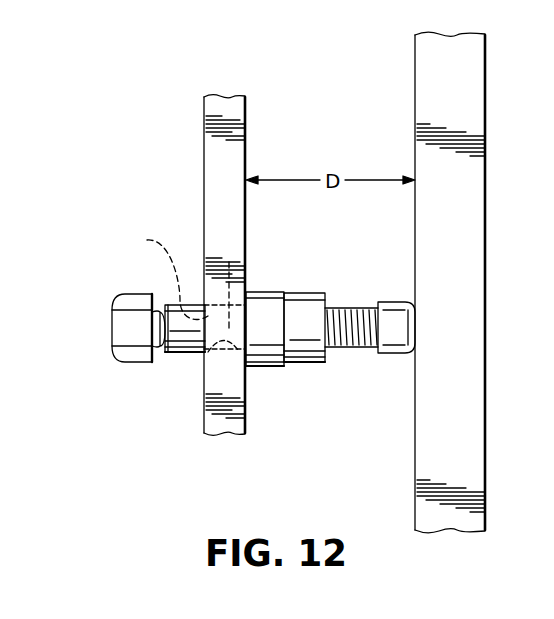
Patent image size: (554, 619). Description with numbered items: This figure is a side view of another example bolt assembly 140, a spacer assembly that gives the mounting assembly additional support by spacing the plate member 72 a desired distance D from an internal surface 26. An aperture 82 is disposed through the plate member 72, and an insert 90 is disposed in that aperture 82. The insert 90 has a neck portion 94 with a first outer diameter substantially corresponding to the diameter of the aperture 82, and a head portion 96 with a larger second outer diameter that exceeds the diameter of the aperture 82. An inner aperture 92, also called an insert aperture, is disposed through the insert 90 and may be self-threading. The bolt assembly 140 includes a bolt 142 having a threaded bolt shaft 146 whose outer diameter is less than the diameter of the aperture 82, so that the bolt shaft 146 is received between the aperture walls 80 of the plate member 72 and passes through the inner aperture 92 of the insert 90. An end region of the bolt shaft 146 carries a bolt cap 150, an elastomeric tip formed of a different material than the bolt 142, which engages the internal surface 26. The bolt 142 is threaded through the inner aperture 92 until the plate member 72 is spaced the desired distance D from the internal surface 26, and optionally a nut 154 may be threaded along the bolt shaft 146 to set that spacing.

The internal surface 26 is at (415, 84).
The plate member 72 is at (204, 165).
The aperture walls 80 is at (159, 271).
The aperture 82 is at (232, 268).
The insert 90 is at (284, 366).
The inner aperture 92 is at (207, 368).
The neck portion 94 is at (168, 305).
The head portion 96 is at (267, 292).
The bolt assembly 140 is at (72, 323).
The bolt 142 is at (120, 365).
The bolt shaft 146 is at (355, 349).
The bolt cap 150 is at (394, 302).
The nut 154 is at (252, 367).